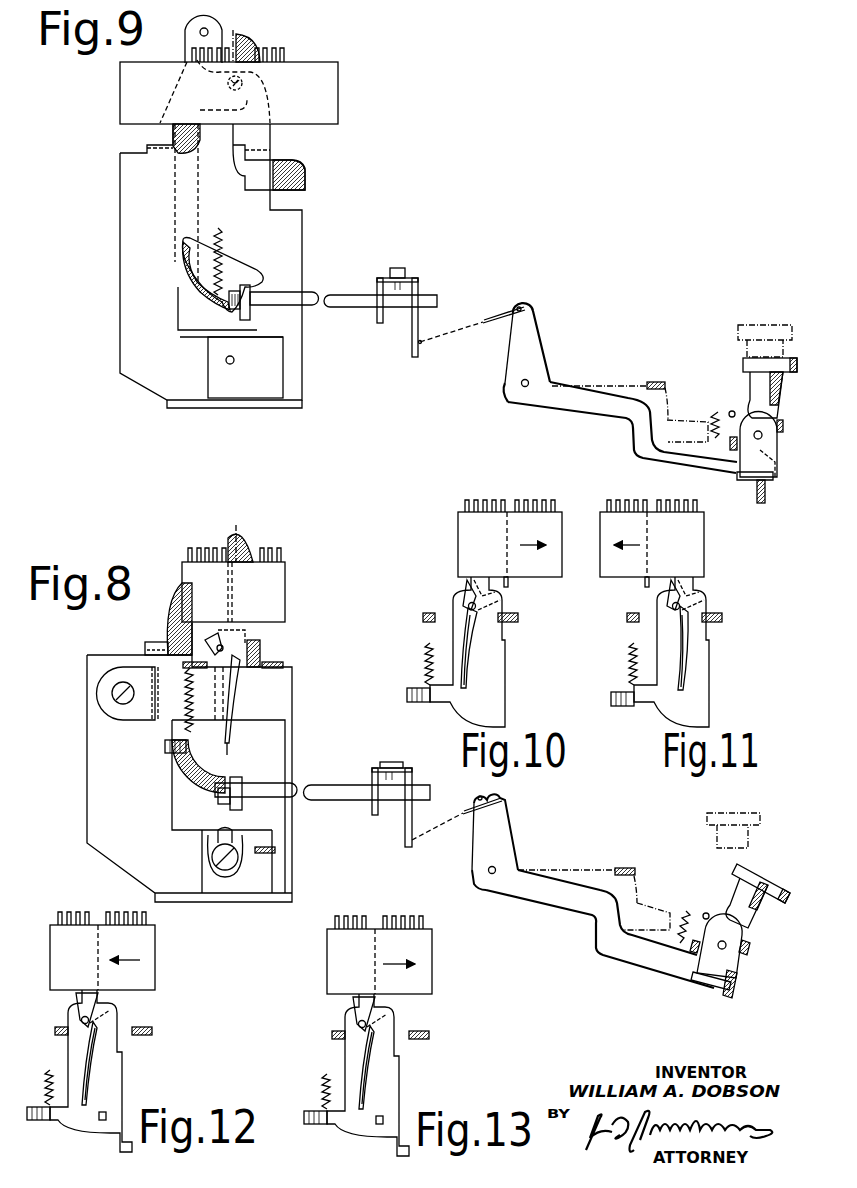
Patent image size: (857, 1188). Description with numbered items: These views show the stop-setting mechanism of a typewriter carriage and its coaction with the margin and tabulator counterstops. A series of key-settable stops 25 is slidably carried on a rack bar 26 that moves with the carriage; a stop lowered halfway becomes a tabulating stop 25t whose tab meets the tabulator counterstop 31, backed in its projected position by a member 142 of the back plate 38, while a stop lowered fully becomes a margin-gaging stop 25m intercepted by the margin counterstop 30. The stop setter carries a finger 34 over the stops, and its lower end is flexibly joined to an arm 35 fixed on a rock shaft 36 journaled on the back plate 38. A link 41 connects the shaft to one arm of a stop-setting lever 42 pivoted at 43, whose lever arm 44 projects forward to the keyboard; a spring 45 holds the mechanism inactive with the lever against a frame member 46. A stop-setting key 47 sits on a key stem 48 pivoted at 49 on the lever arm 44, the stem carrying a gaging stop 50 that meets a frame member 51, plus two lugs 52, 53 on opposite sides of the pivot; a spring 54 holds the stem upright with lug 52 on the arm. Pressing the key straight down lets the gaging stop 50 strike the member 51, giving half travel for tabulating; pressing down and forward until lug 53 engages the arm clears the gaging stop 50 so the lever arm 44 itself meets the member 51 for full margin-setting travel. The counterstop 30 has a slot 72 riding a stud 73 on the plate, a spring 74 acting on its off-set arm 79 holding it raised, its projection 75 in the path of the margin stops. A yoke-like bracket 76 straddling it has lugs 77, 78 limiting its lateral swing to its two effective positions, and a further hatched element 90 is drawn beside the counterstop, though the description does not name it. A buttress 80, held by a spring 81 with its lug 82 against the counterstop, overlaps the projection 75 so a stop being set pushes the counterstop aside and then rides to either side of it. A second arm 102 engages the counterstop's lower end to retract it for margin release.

In FIG. 9, the key-settable stops 25 is at (289, 56).
In FIG. 8, the key-settable stops 25 is at (279, 548).
In FIG. 8, the margin-gaging stop 25m is at (228, 592).
In FIG. 10, the margin-gaging stop 25m is at (511, 512).
In FIG. 11, the margin-gaging stop 25m is at (652, 495).
In FIG. 12, the margin-gaging stop 25m is at (98, 925).
In FIG. 13, the margin-gaging stop 25m is at (379, 911).
In FIG. 9, the tabulating stop 25t is at (238, 129).
In FIG. 9, the rack bar 26 is at (314, 103).
In FIG. 8, the rack bar 26 is at (264, 605).
In FIG. 10, the rack bar 26 is at (485, 556).
In FIG. 11, the rack bar 26 is at (652, 549).
In FIG. 12, the rack bar 26 is at (78, 971).
In FIG. 13, the rack bar 26 is at (379, 961).
In FIG. 10, the margin counterstop 30 is at (488, 708).
In FIG. 11, the margin counterstop 30 is at (671, 652).
In FIG. 9, the tabulator counterstop 31 is at (305, 170).
In FIG. 12, the tabulator counterstop 31 is at (115, 1099).
In FIG. 13, the tabulator counterstop 31 is at (377, 1075).
In FIG. 9, the finger 34 is at (258, 50).
In FIG. 8, the finger 34 is at (168, 635).
In FIG. 9, the arm 35 is at (236, 316).
In FIG. 9, the rock shaft 36 is at (357, 298).
In FIG. 8, the rock shaft 36 is at (316, 798).
In FIG. 9, the back plate 38 is at (156, 290).
In FIG. 8, the back plate 38 is at (142, 813).
In FIG. 9, the link 41 is at (485, 320).
In FIG. 8, the link 41 is at (463, 802).
In FIG. 9, the stop-setting lever 42 is at (537, 326).
In FIG. 8, the stop-setting lever 42 is at (506, 827).
In FIG. 9, the pivot 43 is at (524, 386).
In FIG. 8, the pivot 43 is at (488, 871).
In FIG. 9, the lever arm 44 is at (615, 431).
In FIG. 8, the lever arm 44 is at (624, 980).
In FIG. 9, the spring 45 is at (222, 268).
In FIG. 8, the spring 45 is at (256, 793).
In FIG. 9, the member 46 is at (667, 366).
In FIG. 8, the member 46 is at (640, 856).
In FIG. 9, the stop-setting key 47 is at (742, 356).
In FIG. 8, the stop-setting key 47 is at (768, 882).
In FIG. 9, the key stem 48 is at (750, 388).
In FIG. 8, the key stem 48 is at (736, 891).
In FIG. 9, the stem pivot 49 is at (760, 436).
In FIG. 8, the stem pivot 49 is at (721, 952).
In FIG. 9, the gaging stop 50 is at (414, 342).
In FIG. 8, the gaging stop 50 is at (408, 831).
In FIG. 9, the member 51 is at (764, 502).
In FIG. 8, the member 51 is at (736, 998).
In FIG. 9, the lug 52 is at (732, 451).
In FIG. 8, the lug 52 is at (689, 944).
In FIG. 9, the lug 53 is at (784, 427).
In FIG. 8, the lug 53 is at (750, 950).
In FIG. 9, the spring 54 is at (718, 410).
In FIG. 8, the spring 54 is at (701, 913).
In FIG. 8, the slot 72 is at (214, 832).
In FIG. 8, the stud 73 is at (212, 856).
In FIG. 8, the spring 74 is at (188, 698).
In FIG. 10, the spring 74 is at (424, 651).
In FIG. 11, the spring 74 is at (613, 664).
In FIG. 12, the spring 74 is at (50, 1071).
In FIG. 13, the spring 74 is at (312, 1091).
In FIG. 8, the projection 75 is at (250, 639).
In FIG. 10, the projection 75 is at (499, 565).
In FIG. 11, the projection 75 is at (705, 583).
In FIG. 8, the yoke-like bracket 76 is at (294, 693).
In FIG. 8, the lug 77 is at (266, 668).
In FIG. 10, the lug 77 is at (510, 626).
In FIG. 11, the lug 77 is at (727, 628).
In FIG. 12, the lug 77 is at (145, 1038).
In FIG. 13, the lug 77 is at (431, 1043).
In FIG. 8, the lug 78 is at (196, 670).
In FIG. 10, the lug 78 is at (420, 618).
In FIG. 11, the lug 78 is at (615, 624).
In FIG. 12, the lug 78 is at (59, 1032).
In FIG. 13, the lug 78 is at (321, 1042).
In FIG. 8, the off-set arm 79 is at (172, 755).
In FIG. 10, the off-set arm 79 is at (432, 706).
In FIG. 11, the off-set arm 79 is at (616, 708).
In FIG. 12, the off-set arm 79 is at (48, 1124).
In FIG. 13, the off-set arm 79 is at (315, 1131).
In FIG. 8, the buttress 80 is at (209, 651).
In FIG. 10, the buttress 80 is at (463, 588).
In FIG. 11, the buttress 80 is at (654, 595).
In FIG. 12, the buttress 80 is at (77, 995).
In FIG. 13, the buttress 80 is at (388, 1014).
In FIG. 8, the spring 81 is at (226, 725).
In FIG. 10, the spring 81 is at (477, 660).
In FIG. 11, the spring 81 is at (689, 648).
In FIG. 12, the spring 81 is at (93, 1084).
In FIG. 13, the spring 81 is at (375, 1070).
In FIG. 10, the lug 82 is at (505, 605).
In FIG. 11, the lug 82 is at (709, 605).
In FIG. 12, the lug 82 is at (113, 1016).
In FIG. 13, the lug 82 is at (394, 1022).
In FIG. 8, the guide block 90 is at (261, 652).
In FIG. 8, the second arm 102 is at (275, 850).
In FIG. 9, the member 142 is at (236, 125).